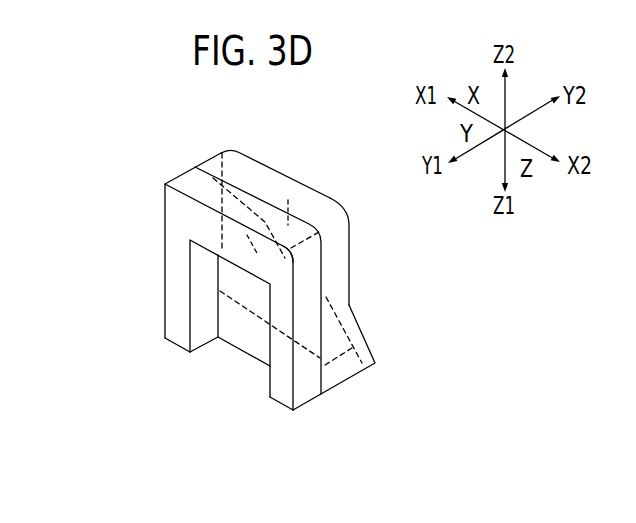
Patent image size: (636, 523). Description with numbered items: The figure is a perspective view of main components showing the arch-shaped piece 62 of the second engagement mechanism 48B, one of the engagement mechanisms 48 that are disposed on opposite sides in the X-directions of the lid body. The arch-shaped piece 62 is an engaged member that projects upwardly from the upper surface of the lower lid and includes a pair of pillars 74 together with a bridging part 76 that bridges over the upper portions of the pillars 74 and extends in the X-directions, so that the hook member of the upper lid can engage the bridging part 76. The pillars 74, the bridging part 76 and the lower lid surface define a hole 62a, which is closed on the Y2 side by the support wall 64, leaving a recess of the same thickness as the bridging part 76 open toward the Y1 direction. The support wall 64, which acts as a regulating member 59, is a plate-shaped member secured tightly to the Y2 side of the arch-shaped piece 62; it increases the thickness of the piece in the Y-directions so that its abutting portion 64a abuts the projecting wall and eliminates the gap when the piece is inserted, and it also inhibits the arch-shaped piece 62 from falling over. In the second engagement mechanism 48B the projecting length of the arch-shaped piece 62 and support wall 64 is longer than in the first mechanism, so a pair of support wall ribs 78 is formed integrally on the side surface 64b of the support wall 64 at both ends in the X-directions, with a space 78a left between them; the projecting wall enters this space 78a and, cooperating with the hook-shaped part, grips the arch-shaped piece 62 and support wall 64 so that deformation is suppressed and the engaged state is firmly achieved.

The second engagement mechanism 48B is at (243, 118).
The engagement mechanism 48 is at (277, 280).
The arch-shaped piece 62 is at (156, 238).
The hole 62a is at (212, 345).
The pillars 74 is at (180, 271).
The bridging part 76 is at (208, 221).
The support wall ribs 78 is at (213, 178).
The space 78a is at (299, 212).
The support wall 64 is at (353, 289).
The regulating member 59 is at (322, 219).
The abutting portion 64a is at (247, 151).
The side surface 64b is at (352, 222).